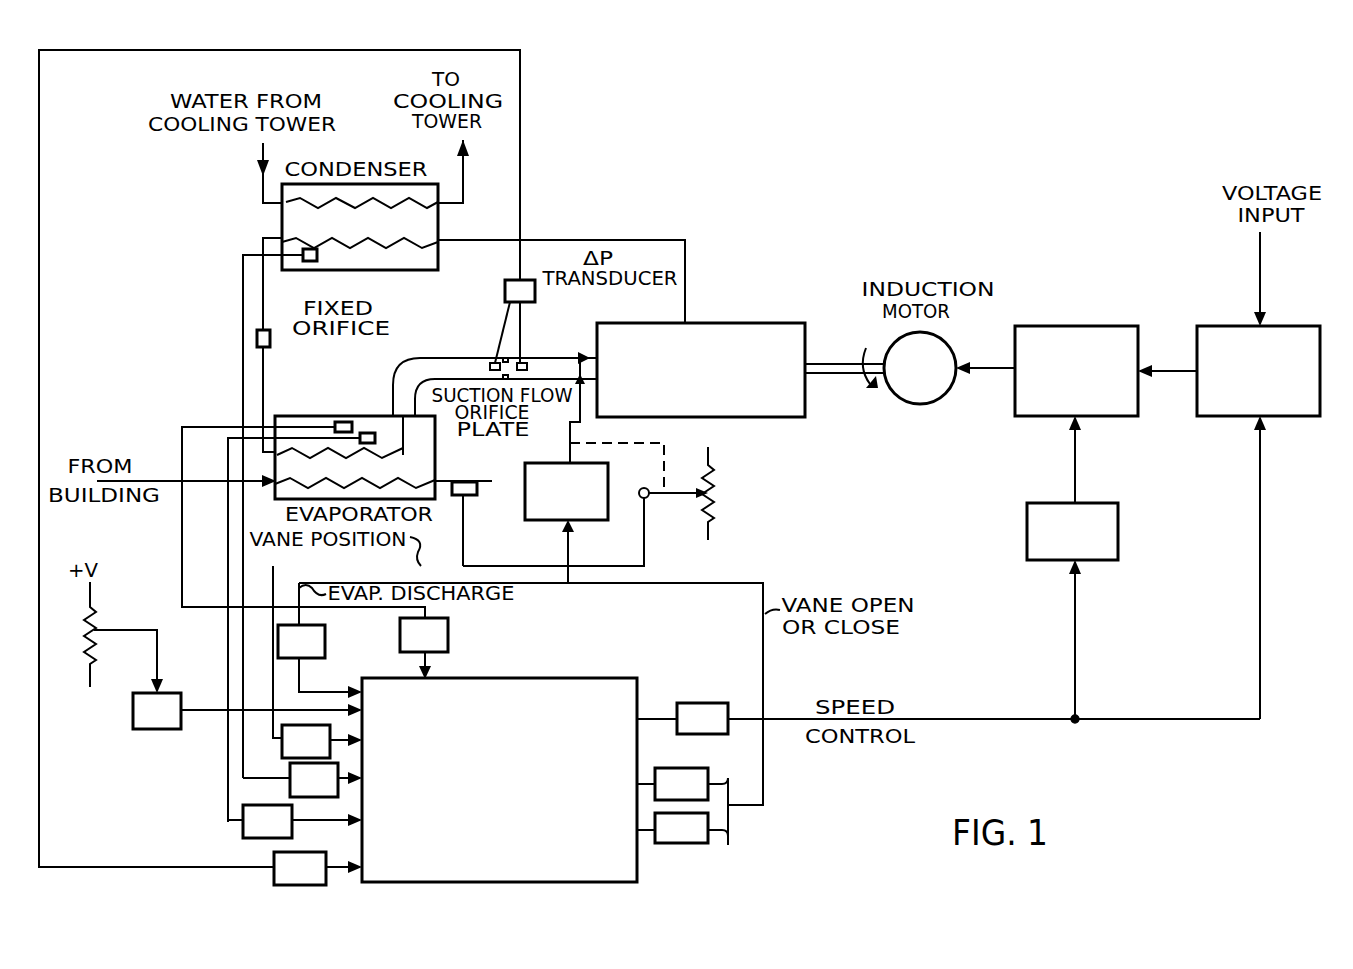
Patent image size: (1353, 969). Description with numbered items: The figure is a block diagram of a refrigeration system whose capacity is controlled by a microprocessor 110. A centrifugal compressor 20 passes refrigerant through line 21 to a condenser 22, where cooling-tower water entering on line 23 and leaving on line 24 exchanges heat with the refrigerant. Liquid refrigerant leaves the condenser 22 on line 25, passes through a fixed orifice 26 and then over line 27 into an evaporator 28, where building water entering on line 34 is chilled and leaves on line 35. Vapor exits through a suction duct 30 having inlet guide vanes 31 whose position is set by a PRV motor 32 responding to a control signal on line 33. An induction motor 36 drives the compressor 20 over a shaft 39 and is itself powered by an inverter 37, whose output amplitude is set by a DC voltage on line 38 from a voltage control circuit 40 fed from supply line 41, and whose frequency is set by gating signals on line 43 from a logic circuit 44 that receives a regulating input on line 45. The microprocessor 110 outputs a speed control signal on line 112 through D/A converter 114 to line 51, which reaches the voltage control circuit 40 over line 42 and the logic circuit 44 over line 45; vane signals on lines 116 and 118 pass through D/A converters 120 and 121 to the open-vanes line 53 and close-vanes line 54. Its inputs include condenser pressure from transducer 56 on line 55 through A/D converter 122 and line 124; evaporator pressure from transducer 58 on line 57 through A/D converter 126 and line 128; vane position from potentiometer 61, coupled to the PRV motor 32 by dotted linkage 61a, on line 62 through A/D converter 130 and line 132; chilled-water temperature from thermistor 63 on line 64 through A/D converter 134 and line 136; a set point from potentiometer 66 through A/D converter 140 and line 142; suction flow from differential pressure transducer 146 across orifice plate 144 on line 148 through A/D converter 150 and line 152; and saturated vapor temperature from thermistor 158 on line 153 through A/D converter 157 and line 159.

The centrifugal compressor 20 is at (738, 323).
The line 21 is at (686, 268).
The condenser 22 is at (440, 258).
The line 23 is at (263, 186).
The line 24 is at (466, 162).
The line 25 is at (263, 306).
The fixed orifice 26 is at (270, 330).
The line 27 is at (264, 386).
The evaporator 28 is at (297, 416).
The suction duct 30 is at (468, 358).
The inlet guide vanes 31 is at (581, 356).
The PRV motor 32 is at (546, 462).
The line 33 is at (568, 586).
The line 34 is at (204, 483).
The line 35 is at (497, 480).
The induction motor 36 is at (932, 332).
The inverter 37 is at (1076, 326).
The line 38 is at (1162, 370).
The motor shaft 39 is at (843, 376).
The voltage control circuit 40 is at (1230, 326).
The voltage supply line 41 is at (1264, 300).
The speed control line to voltage control 42 is at (1262, 466).
The line 43 is at (1078, 462).
The logic circuit 44 is at (1027, 530).
The line 45 is at (1077, 665).
The line 51 is at (985, 718).
The line 53 is at (724, 850).
The line 54 is at (724, 770).
The line 55 is at (243, 338).
The first pressure transducer 56 is at (317, 258).
The line 57 is at (226, 450).
The second pressure transducer 58 is at (368, 432).
The potentiometer 61 is at (722, 493).
The dotted lines 61a is at (638, 442).
The line 62 is at (646, 544).
The thermistor 63 is at (478, 494).
The line 64 is at (465, 532).
The potentiometer 66 is at (90, 632).
The microprocessor 110 is at (497, 883).
The line 112 is at (665, 716).
The D/A converter 114 is at (714, 703).
The line 116 is at (645, 824).
The line 118 is at (645, 782).
The D/A converter 120 is at (668, 843).
The D/A converter 121 is at (682, 768).
The A/D converter 122 is at (290, 770).
The line 124 is at (340, 774).
The A/D converter 126 is at (243, 836).
The line 128 is at (330, 820).
The A/D converter 130 is at (278, 735).
The line 132 is at (340, 742).
The A/D converter 134 is at (327, 634).
The line 136 is at (331, 691).
The A/D converter 140 is at (146, 730).
The line 142 is at (293, 710).
The orifice plate 144 is at (507, 354).
The differential pressure transducer 146 is at (533, 279).
The line 148 is at (522, 165).
The A/D converter 150 is at (294, 888).
The line 152 is at (336, 870).
The line 153 is at (182, 562).
The A/D converter 157 is at (450, 633).
The evaporator discharge temperature sensor 158 is at (343, 422).
The line 159 is at (428, 664).